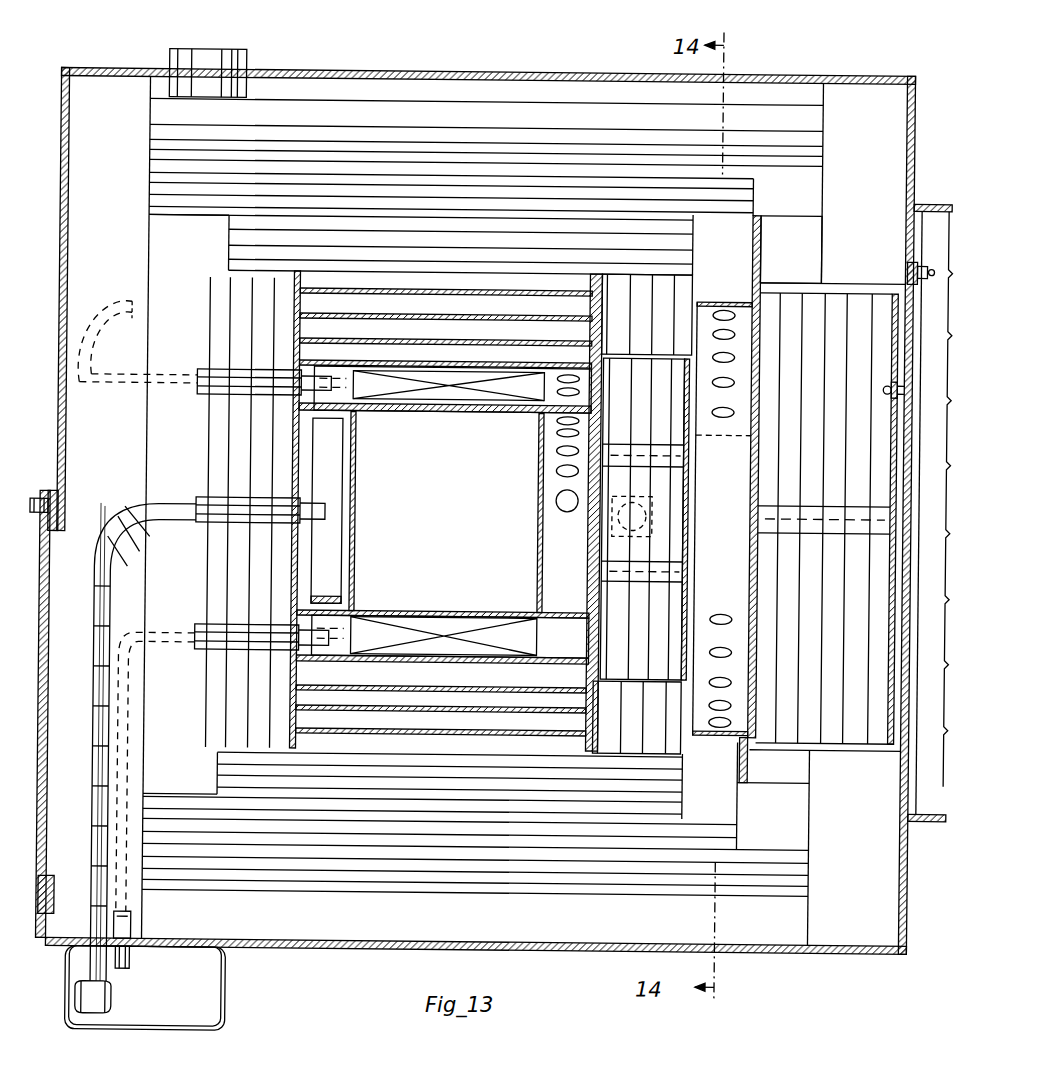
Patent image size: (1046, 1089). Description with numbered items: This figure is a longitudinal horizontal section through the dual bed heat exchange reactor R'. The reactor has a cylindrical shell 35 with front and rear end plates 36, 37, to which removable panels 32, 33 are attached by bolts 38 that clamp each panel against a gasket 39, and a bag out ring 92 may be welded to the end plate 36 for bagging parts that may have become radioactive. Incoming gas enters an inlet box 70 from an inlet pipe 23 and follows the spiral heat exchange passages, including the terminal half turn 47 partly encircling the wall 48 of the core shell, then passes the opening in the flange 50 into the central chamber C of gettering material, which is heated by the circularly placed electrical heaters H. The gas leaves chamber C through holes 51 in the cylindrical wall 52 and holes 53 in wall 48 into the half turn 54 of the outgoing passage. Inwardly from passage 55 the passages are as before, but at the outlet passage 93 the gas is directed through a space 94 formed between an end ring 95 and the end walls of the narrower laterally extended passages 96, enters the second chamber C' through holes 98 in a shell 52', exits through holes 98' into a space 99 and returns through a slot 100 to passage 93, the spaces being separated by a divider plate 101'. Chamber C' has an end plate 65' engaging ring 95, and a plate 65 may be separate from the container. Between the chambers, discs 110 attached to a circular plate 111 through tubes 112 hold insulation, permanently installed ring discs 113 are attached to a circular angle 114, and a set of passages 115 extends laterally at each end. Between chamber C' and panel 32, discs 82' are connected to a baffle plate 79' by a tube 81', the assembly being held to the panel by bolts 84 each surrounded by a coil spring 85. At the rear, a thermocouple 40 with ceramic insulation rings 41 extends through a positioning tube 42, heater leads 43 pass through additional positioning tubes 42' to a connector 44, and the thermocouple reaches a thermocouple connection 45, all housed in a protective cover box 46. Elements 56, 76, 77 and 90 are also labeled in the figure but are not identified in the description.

The inlet pipe 23 is at (168, 62).
The removable panel 32 is at (897, 742).
The removable panel 33 is at (42, 905).
The cylindrical shell 35 is at (350, 72).
The front end plate 36 is at (908, 170).
The rear end plate 37 is at (68, 190).
The bolts 38 is at (30, 508).
The gasket 39 is at (54, 495).
The thermocouple 40 is at (325, 515).
The insulation rings 41 is at (112, 582).
The positioning tube 42 is at (190, 479).
The positioning tubes 42' is at (245, 510).
The heater leads 43 is at (120, 398).
The connector 44 is at (136, 962).
The thermocouple connection 45 is at (116, 1000).
The protective cover box 46 is at (232, 996).
The terminal half turn 47 is at (400, 670).
The wall of core shell 48 is at (510, 650).
The flange 50 is at (330, 565).
The holes 51 is at (556, 450).
The cylindrical wall 52 is at (445, 408).
The shell 52' is at (666, 494).
The holes 53 is at (540, 390).
The half turn 54 is at (290, 353).
The passage 55 is at (290, 292).
The wall 56 is at (232, 268).
The plate 65 is at (569, 518).
The end plate 65' is at (727, 476).
The inlet box 70 is at (810, 122).
The column 76 is at (345, 532).
The chamber wall 77 is at (538, 535).
The baffle plate 79' is at (827, 518).
The tube 81' is at (824, 497).
The discs 82' is at (811, 642).
The bolts 84 is at (896, 378).
The coil spring 85 is at (896, 395).
The spacer 90 is at (270, 345).
The bag out ring 92 is at (928, 818).
The outlet passage 93 is at (180, 810).
The space 94 is at (757, 215).
The end ring 95 is at (757, 245).
The laterally extended passages 96 is at (224, 232).
The holes 98 is at (753, 340).
The holes 98' is at (723, 658).
The space 99 is at (730, 800).
The slot 100 is at (665, 535).
The chamber 101' is at (723, 461).
The discs 110 is at (610, 555).
The circular plate 111 is at (640, 605).
The tubes 112 is at (660, 510).
The ring discs 113 is at (610, 325).
The circular angle 114 is at (683, 745).
The passages 115 is at (822, 155).
The central chamber C is at (444, 524).
The chamber C' is at (721, 550).
The electrical heaters H is at (440, 395).
The reactor R' is at (483, 38).